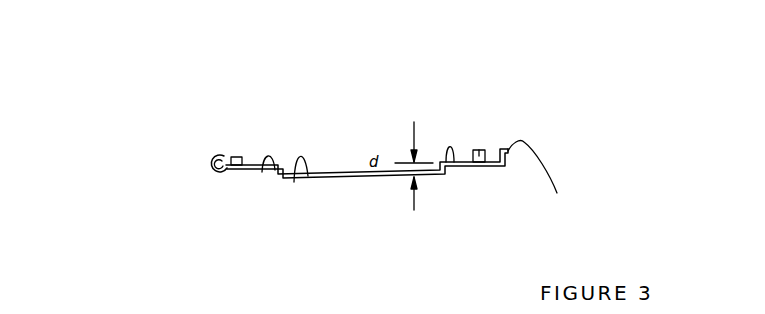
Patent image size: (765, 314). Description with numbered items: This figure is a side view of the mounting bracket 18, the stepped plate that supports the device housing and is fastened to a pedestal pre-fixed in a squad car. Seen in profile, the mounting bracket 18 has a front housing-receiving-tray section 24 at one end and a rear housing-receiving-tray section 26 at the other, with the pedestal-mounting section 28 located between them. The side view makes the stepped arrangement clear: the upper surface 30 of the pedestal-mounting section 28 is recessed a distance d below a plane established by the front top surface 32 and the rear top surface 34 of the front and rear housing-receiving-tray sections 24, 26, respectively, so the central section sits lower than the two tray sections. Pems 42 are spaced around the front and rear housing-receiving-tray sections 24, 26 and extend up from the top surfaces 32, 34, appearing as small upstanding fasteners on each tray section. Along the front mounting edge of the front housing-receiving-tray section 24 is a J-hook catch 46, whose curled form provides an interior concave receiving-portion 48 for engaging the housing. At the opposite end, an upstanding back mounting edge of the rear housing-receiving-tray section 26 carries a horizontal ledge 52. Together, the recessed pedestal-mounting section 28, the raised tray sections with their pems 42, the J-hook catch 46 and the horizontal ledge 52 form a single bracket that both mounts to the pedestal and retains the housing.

The mounting bracket 18 is at (551, 106).
The front housing-receiving-tray section 24 is at (258, 164).
The rear housing-receiving-tray section 26 is at (459, 161).
The pedestal-mounting section 28 is at (334, 175).
The upper surface 30 is at (296, 168).
The front top surface 32 is at (262, 170).
The rear top surface 34 is at (447, 164).
The pems 42 is at (219, 153).
The J-hook catch 46 is at (210, 158).
The interior concave receiving-portion 48 is at (222, 172).
The horizontal ledge 52 is at (541, 185).